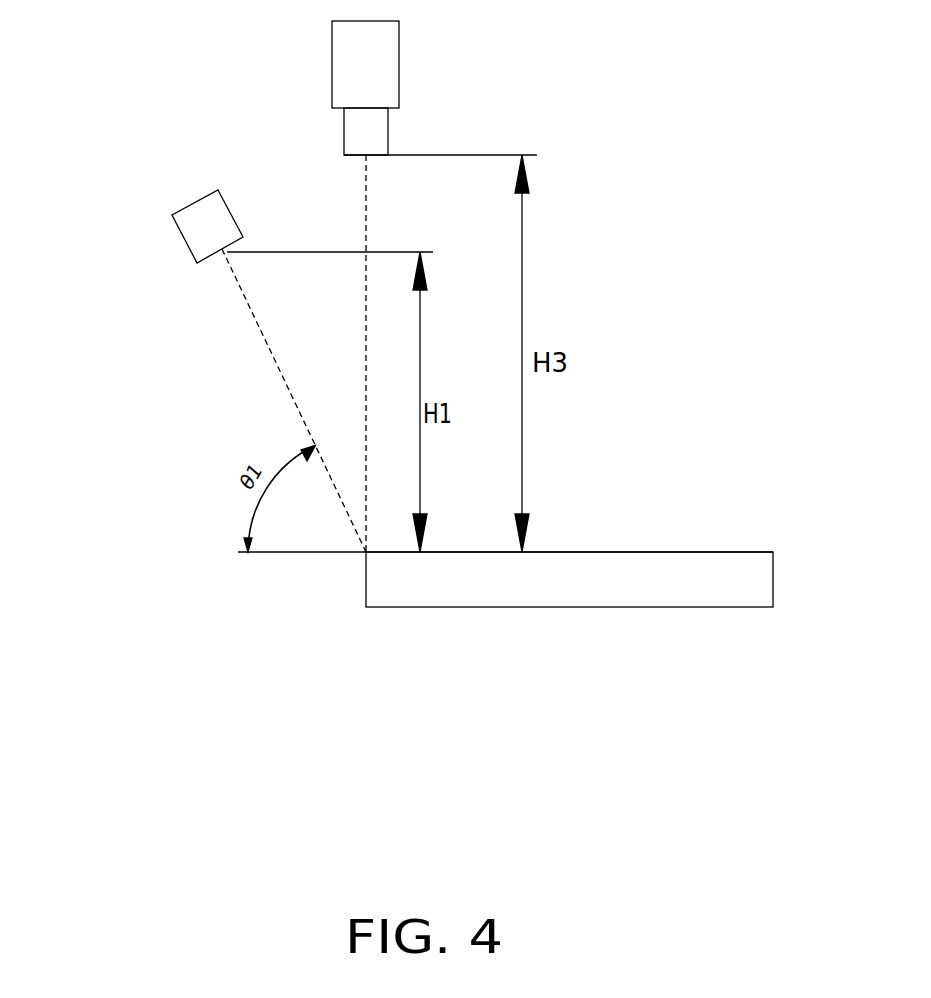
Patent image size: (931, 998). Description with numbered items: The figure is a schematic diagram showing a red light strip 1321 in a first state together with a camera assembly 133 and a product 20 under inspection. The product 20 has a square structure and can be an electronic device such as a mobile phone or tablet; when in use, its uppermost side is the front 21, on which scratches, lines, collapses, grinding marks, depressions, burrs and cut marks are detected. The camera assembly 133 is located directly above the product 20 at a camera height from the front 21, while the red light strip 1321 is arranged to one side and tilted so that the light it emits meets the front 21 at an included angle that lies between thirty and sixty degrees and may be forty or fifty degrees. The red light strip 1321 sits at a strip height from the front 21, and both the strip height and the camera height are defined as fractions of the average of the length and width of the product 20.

The camera assembly 133 is at (385, 43).
The red light strip 1321 is at (193, 225).
The product 20 is at (702, 597).
The front 21 is at (720, 552).